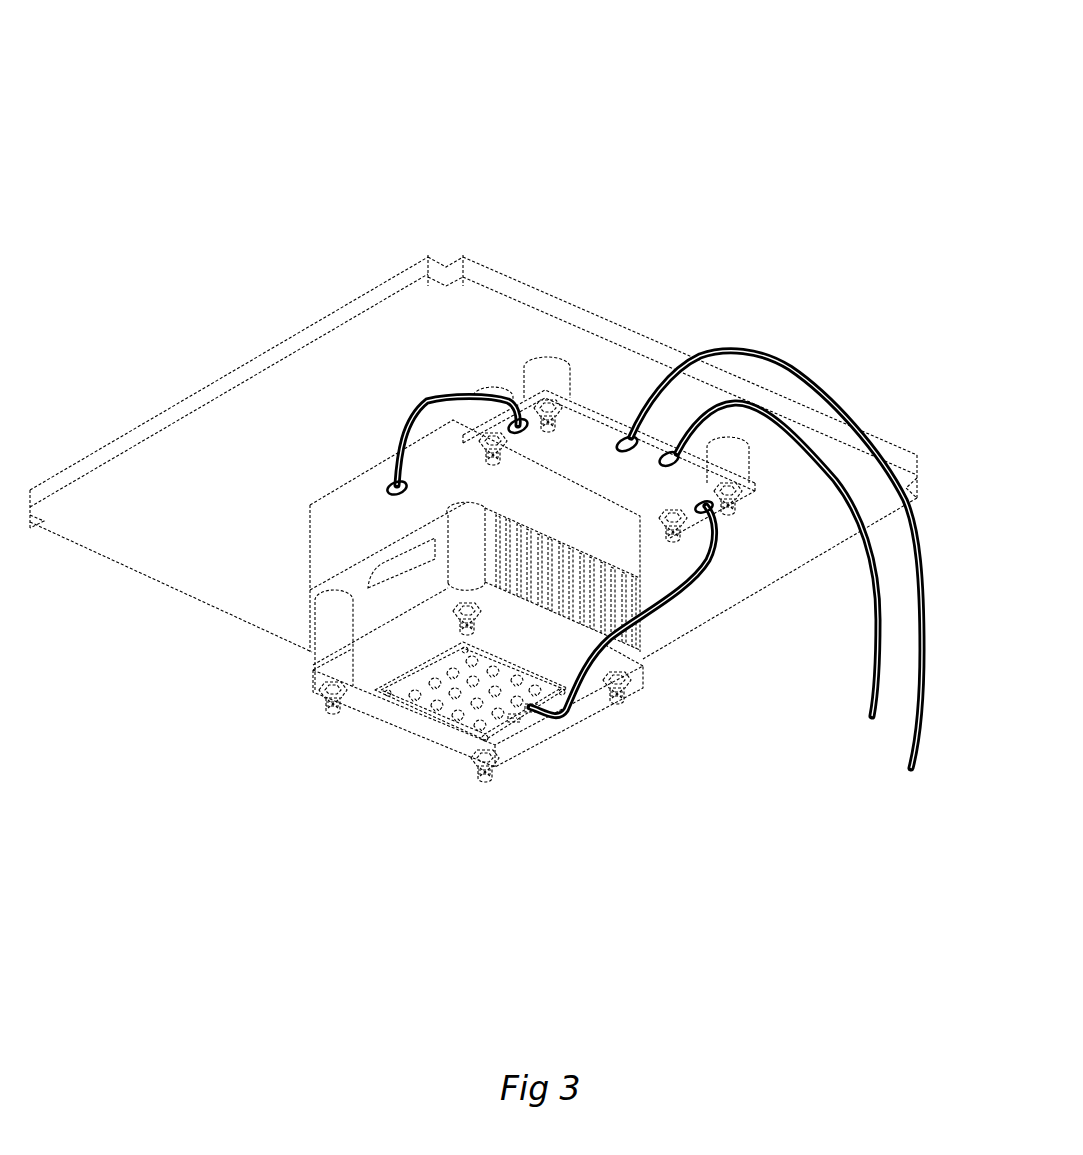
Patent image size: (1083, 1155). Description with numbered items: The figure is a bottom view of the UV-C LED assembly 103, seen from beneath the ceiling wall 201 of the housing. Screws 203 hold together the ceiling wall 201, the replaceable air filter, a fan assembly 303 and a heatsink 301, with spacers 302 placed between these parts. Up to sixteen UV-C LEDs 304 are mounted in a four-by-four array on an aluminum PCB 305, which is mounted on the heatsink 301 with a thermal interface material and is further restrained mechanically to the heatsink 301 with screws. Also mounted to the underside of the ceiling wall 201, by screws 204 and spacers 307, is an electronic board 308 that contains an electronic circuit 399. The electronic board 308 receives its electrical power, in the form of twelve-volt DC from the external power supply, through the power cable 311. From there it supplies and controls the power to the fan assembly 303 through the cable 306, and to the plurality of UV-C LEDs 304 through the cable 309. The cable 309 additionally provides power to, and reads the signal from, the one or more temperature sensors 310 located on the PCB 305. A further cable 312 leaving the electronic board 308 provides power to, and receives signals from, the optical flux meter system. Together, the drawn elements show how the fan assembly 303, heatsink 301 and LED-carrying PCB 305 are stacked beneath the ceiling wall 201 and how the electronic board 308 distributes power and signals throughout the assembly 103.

The UV-C LED assembly 103 is at (142, 51).
The ceiling wall 201 is at (110, 442).
The screws 203 is at (330, 705).
The screws 204 is at (560, 428).
The heatsink 301 is at (312, 678).
The spacers 302 is at (313, 625).
The fan assembly 303 is at (310, 557).
The UV-C LEDs 304 is at (453, 720).
The PCB 305 is at (423, 720).
The cable 306 is at (400, 420).
The spacers 307 is at (540, 358).
The electronic board 308 is at (618, 435).
The cable 309 is at (700, 577).
The temperature sensors 310 is at (522, 722).
The power cable 311 is at (901, 765).
The cable 312 is at (868, 678).
The electronic circuit 399 is at (636, 491).